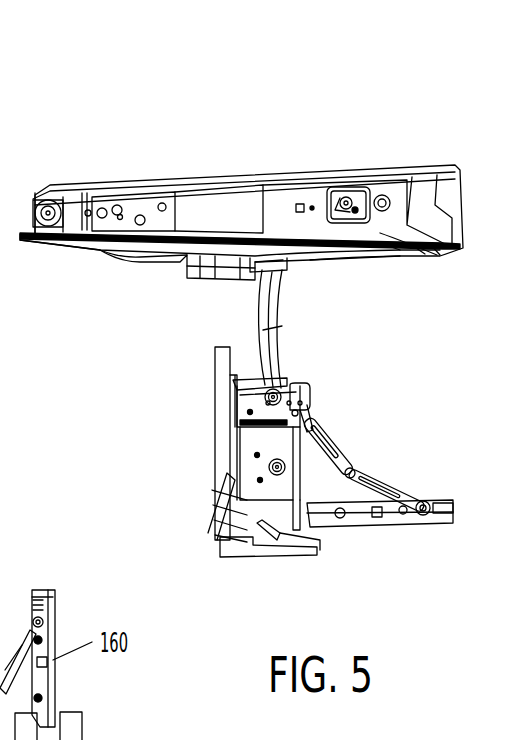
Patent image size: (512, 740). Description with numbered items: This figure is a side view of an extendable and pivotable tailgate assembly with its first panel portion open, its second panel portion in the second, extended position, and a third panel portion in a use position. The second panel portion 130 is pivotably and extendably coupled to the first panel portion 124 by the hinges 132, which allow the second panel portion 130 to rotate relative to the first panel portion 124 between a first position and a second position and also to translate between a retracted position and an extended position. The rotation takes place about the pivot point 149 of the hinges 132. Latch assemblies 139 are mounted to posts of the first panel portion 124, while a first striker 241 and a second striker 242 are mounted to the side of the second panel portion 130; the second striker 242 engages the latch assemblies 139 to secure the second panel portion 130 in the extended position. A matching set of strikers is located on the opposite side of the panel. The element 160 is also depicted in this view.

The first panel portion 124 is at (232, 175).
The hinges 132 is at (277, 318).
The pivot point 149 is at (290, 272).
The latch assemblies 139 is at (247, 412).
The second striker 242 is at (267, 390).
The first striker 241 is at (267, 472).
The second panel portion 130 is at (273, 523).
The rail / arm assembly 160 is at (387, 527).